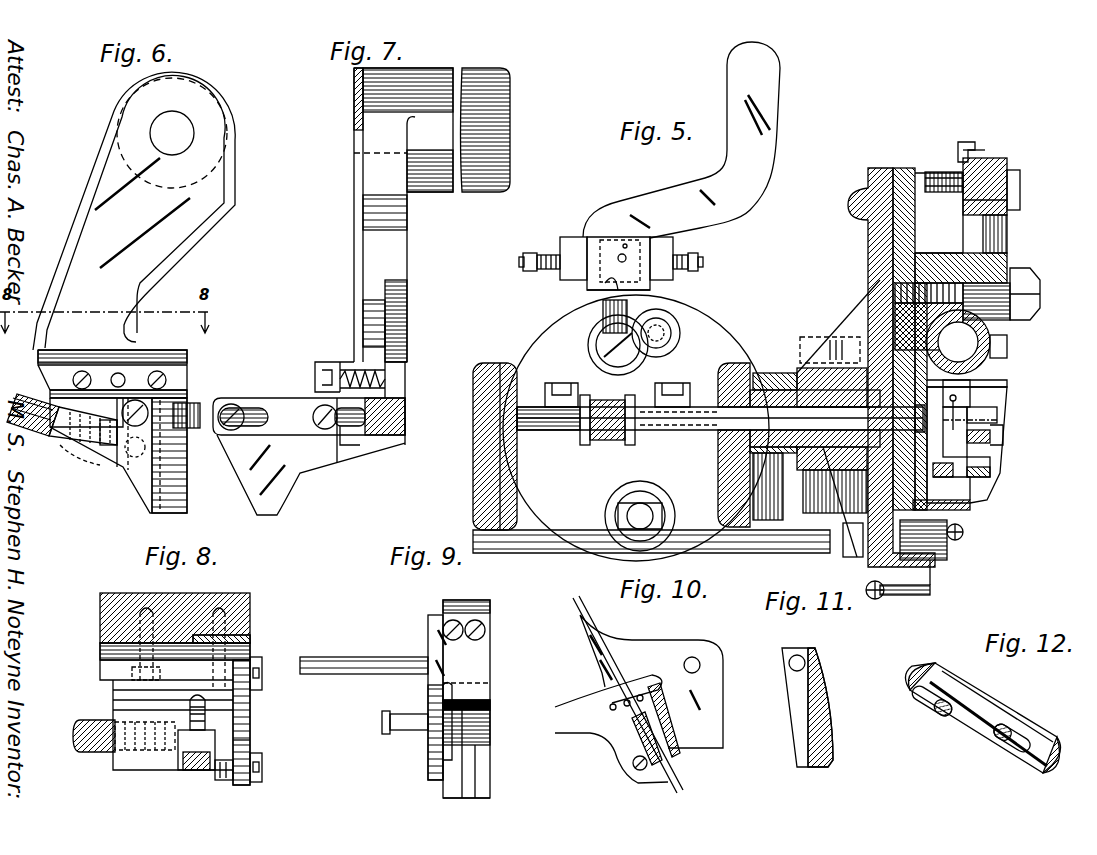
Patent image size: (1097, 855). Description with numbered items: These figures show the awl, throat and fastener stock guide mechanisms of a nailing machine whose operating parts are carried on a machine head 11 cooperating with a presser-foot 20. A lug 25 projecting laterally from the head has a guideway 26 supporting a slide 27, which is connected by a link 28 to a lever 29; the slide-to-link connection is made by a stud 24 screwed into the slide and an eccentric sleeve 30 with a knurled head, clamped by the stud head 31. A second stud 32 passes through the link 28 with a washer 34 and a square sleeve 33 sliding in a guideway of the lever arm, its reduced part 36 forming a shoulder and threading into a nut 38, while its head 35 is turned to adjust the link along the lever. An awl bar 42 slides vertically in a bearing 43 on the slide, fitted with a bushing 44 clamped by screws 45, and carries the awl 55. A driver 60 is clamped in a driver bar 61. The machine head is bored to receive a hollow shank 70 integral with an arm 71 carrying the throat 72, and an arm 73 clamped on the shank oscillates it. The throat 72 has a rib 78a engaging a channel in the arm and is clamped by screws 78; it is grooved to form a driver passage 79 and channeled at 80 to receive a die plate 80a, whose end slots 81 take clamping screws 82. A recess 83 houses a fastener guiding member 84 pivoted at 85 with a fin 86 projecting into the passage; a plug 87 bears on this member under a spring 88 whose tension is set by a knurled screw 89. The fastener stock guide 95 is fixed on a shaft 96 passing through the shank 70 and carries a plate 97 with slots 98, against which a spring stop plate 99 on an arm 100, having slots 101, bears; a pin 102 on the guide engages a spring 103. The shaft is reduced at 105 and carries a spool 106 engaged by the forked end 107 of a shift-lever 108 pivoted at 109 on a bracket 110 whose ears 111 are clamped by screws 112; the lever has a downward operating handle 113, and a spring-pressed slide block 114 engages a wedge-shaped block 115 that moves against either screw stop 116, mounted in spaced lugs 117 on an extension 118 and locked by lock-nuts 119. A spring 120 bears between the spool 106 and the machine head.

In FIG. 5, the machine head 11 is at (542, 490).
In FIG. 5, the foot-plate or presser-foot 20 is at (1003, 456).
In FIG. 5, the stud 24 is at (990, 290).
In FIG. 5, the lug 25 is at (870, 190).
In FIG. 5, the guideway 26 is at (805, 360).
In FIG. 5, the slide 27 is at (905, 168).
In FIG. 5, the link 28 is at (996, 242).
In FIG. 5, the lever 29 is at (960, 175).
In FIG. 5, the eccentric sleeve 30 is at (990, 352).
In FIG. 5, the head 31 is at (1032, 296).
In FIG. 5, the stud 32 is at (987, 200).
In FIG. 5, the square sleeve 33 is at (976, 180).
In FIG. 5, the washer 34 is at (970, 152).
In FIG. 5, the head 35 is at (1016, 180).
In FIG. 5, the reduced part 36 is at (946, 172).
In FIG. 5, the nut 38 is at (930, 172).
In FIG. 5, the awl bar 42 is at (995, 352).
In FIG. 5, the bearing 43 is at (985, 376).
In FIG. 5, the bushing 44 is at (956, 399).
In FIG. 5, the screws 45 is at (1007, 350).
In FIG. 5, the awl 55 is at (1035, 402).
In FIG. 5, the driver 60 is at (990, 438).
In FIG. 5, the driver bar 61 is at (985, 471).
In FIG. 6, the sleeve or hollow shank 70 is at (172, 147).
In FIG. 7, the sleeve or hollow shank 70 is at (486, 143).
In FIG. 5, the sleeve or hollow shank 70 is at (812, 478).
In FIG. 6, the arm 71 is at (134, 211).
In FIG. 7, the arm 71 is at (403, 215).
In FIG. 8, the arm 71 is at (205, 606).
In FIG. 6, the throat 72 is at (187, 470).
In FIG. 7, the throat 72 is at (312, 463).
In FIG. 5, the throat 72 is at (966, 432).
In FIG. 5, the arm 73 is at (762, 373).
In FIG. 6, the screws 78 is at (72, 381).
In FIG. 7, the screws 78 is at (326, 366).
In FIG. 8, the screws 78 is at (250, 640).
In FIG. 7, the rib 78a is at (348, 432).
In FIG. 8, the driver passage 79 is at (236, 742).
In FIG. 7, the channel 80 is at (400, 421).
In FIG. 7, the cutter or die plate 80a is at (257, 399).
In FIG. 8, the cutter or die plate 80a is at (252, 712).
In FIG. 12, the cutter or die plate 80a is at (988, 707).
In FIG. 7, the slots 81 is at (258, 410).
In FIG. 12, the slots 81 is at (933, 690).
In FIG. 6, the screws 82 is at (178, 420).
In FIG. 7, the screws 82 is at (320, 426).
In FIG. 8, the screws 82 is at (262, 665).
In FIG. 6, the recess 83 is at (95, 430).
In FIG. 8, the recess 83 is at (183, 764).
In FIG. 6, the fastener guiding member 84 is at (145, 470).
In FIG. 8, the fastener guiding member 84 is at (196, 746).
In FIG. 11, the fastener guiding member 84 is at (802, 700).
In FIG. 6, the pivot 85 is at (137, 400).
In FIG. 8, the pivot 85 is at (225, 773).
In FIG. 6, the rib or fin 86 is at (165, 455).
In FIG. 11, the rib or fin 86 is at (833, 702).
In FIG. 6, the plug 87 is at (116, 446).
In FIG. 8, the plug 87 is at (170, 746).
In FIG. 6, the spring 88 is at (100, 442).
In FIG. 8, the spring 88 is at (188, 726).
In FIG. 6, the knurled screw 89 is at (38, 432).
In FIG. 5, the knurled screw 89 is at (967, 534).
In FIG. 8, the knurled screw 89 is at (94, 753).
In FIG. 5, the fastener stock guide 95 is at (855, 557).
In FIG. 10, the fastener stock guide 95 is at (715, 715).
In FIG. 5, the shaft 96 is at (765, 456).
In FIG. 9, the shaft 96 is at (363, 662).
In FIG. 10, the shaft 96 is at (698, 661).
In FIG. 5, the plate 97 is at (975, 489).
In FIG. 9, the plate 97 is at (484, 786).
In FIG. 10, the plate 97 is at (668, 765).
In FIG. 9, the slots 98 is at (466, 766).
In FIG. 9, the spring stop plate 99 is at (482, 700).
In FIG. 10, the spring stop plate 99 is at (611, 729).
In FIG. 5, the arm 100 is at (970, 507).
In FIG. 9, the arm 100 is at (436, 626).
In FIG. 10, the arm 100 is at (639, 651).
In FIG. 9, the slots 101 is at (466, 745).
In FIG. 5, the pin 102 is at (905, 597).
In FIG. 9, the pin 102 is at (402, 734).
In FIG. 5, the spring 103 is at (878, 601).
In FIG. 5, the reduced portion 105 is at (588, 446).
In FIG. 5, the spool 106 is at (634, 460).
In FIG. 5, the forked end 107 is at (604, 448).
In FIG. 5, the shift-lever 108 is at (681, 140).
In FIG. 5, the pivot 109 is at (604, 350).
In FIG. 5, the bracket 110 is at (658, 358).
In FIG. 5, the ears 111 is at (546, 405).
In FIG. 5, the screws 112 is at (560, 383).
In FIG. 5, the operating handle 113 is at (751, 100).
In FIG. 5, the slide block 114 is at (595, 287).
In FIG. 5, the wedge-shaped block 115 is at (625, 240).
In FIG. 5, the screw stops 116 is at (545, 256).
In FIG. 5, the lugs 117 is at (574, 238).
In FIG. 5, the extension 118 is at (600, 240).
In FIG. 5, the lock-nuts 119 is at (535, 279).
In FIG. 5, the spring 120 is at (662, 447).